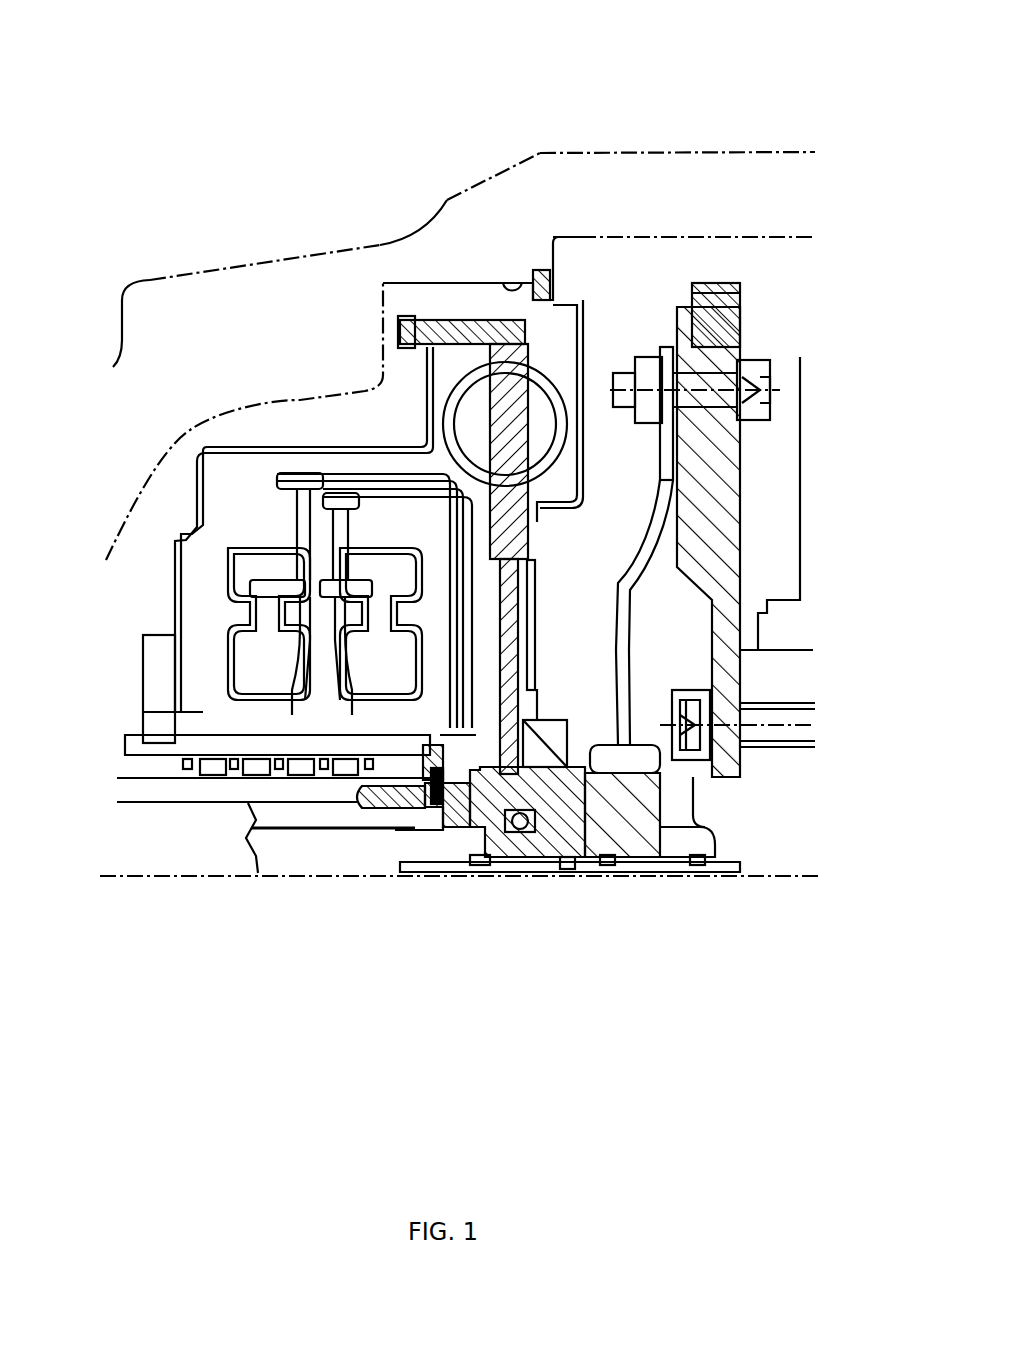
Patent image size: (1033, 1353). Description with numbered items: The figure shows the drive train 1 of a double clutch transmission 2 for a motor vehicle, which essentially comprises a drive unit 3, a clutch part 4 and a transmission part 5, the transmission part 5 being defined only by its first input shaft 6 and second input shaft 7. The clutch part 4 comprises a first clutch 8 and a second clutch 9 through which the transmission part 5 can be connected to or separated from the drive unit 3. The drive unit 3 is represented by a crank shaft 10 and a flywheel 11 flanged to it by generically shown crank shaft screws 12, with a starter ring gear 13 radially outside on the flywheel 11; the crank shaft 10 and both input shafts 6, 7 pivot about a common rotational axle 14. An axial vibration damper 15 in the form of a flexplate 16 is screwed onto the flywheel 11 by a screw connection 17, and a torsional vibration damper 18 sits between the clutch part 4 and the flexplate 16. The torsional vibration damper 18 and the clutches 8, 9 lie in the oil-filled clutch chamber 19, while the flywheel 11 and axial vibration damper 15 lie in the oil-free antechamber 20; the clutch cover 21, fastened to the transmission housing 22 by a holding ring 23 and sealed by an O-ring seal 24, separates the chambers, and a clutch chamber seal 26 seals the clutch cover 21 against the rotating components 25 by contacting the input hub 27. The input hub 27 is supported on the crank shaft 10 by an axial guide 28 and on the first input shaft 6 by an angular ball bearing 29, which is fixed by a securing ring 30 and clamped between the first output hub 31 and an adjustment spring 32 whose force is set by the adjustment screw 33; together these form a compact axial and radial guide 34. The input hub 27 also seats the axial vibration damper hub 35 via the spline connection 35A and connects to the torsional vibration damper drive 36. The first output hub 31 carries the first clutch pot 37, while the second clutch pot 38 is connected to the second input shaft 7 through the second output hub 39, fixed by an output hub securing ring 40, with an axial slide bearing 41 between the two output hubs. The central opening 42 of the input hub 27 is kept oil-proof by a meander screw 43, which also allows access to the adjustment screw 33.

The drive train 1 is at (244, 1068).
The double clutch transmission 2 is at (519, 187).
The drive unit 3 is at (810, 345).
The clutch part 4 is at (273, 224).
The transmission part 5 is at (162, 906).
The first input shaft 6 is at (374, 856).
The second input shaft 7 is at (322, 815).
The first clutch 8 is at (214, 392).
The second clutch 9 is at (364, 294).
The crank shaft 10 is at (792, 850).
The flywheel 11 is at (683, 318).
The crank shaft screws 12 is at (773, 737).
The starter ring gear 13 is at (718, 307).
The rotational axle 14 is at (104, 884).
The axial vibration damper 15 is at (607, 88).
The flexplate 16 is at (650, 510).
The screw connection 17 is at (747, 407).
The torsional vibration damper 18 is at (472, 298).
The clutch chamber 19 is at (355, 408).
The antechamber 20 is at (570, 555).
The clutch cover 21 is at (578, 310).
The transmission housing 22 is at (570, 222).
The holding ring 23 is at (553, 297).
The O-ring seal 24 is at (518, 282).
The rotating components 25 is at (662, 1056).
The clutch chamber seal 26 is at (580, 825).
The input hub 27 is at (600, 850).
The axial guide 28 is at (735, 850).
The angular ball bearing 29 is at (505, 840).
The securing ring 30 is at (497, 840).
The first output hub 31 is at (434, 832).
The adjustment spring 32 is at (521, 835).
The adjustment screw 33 is at (563, 848).
The axial and radial guide 34 is at (495, 1072).
The axial vibration damper hub 35 is at (590, 850).
The spline connection 35A is at (660, 850).
The torsional vibration damper drive 36 is at (511, 619).
The first clutch pot 37 is at (485, 835).
The second clutch pot 38 is at (357, 497).
The second output hub 39 is at (405, 830).
The output hub securing ring 40 is at (428, 830).
The axial slide bearing 41 is at (422, 830).
The central opening 42 is at (630, 850).
The meander screw 43 is at (677, 865).